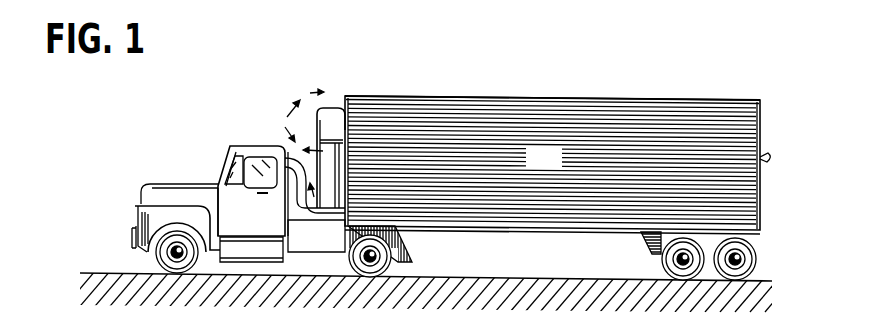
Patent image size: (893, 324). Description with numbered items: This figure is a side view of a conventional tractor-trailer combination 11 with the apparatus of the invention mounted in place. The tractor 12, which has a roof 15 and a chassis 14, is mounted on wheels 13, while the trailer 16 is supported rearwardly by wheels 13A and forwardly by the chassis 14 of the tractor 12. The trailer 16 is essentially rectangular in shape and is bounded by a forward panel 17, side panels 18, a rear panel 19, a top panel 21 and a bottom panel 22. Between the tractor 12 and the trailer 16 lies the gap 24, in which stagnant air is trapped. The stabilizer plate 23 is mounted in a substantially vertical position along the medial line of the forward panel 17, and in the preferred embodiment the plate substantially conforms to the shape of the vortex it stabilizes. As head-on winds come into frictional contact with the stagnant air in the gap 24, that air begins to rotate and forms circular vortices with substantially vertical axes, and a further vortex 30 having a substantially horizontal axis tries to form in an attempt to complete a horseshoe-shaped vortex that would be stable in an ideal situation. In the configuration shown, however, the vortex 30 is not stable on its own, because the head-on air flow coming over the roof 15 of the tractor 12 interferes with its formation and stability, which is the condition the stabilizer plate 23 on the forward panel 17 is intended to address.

The tractor-trailer combination 11 is at (578, 76).
The tractor 12 is at (151, 158).
The wheels 13 is at (394, 266).
The wheels 13A is at (664, 266).
The chassis 14 is at (320, 252).
The roof 15 is at (250, 144).
The trailer 16 is at (641, 94).
The forward panel 17 is at (343, 106).
The side panels 18 is at (556, 166).
The rear panel 19 is at (758, 158).
The top panel 21 is at (468, 96).
The bottom panel 22 is at (512, 228).
The stabilizer plate 23 is at (336, 150).
The gap 24 is at (312, 190).
The vortex 30 is at (306, 108).